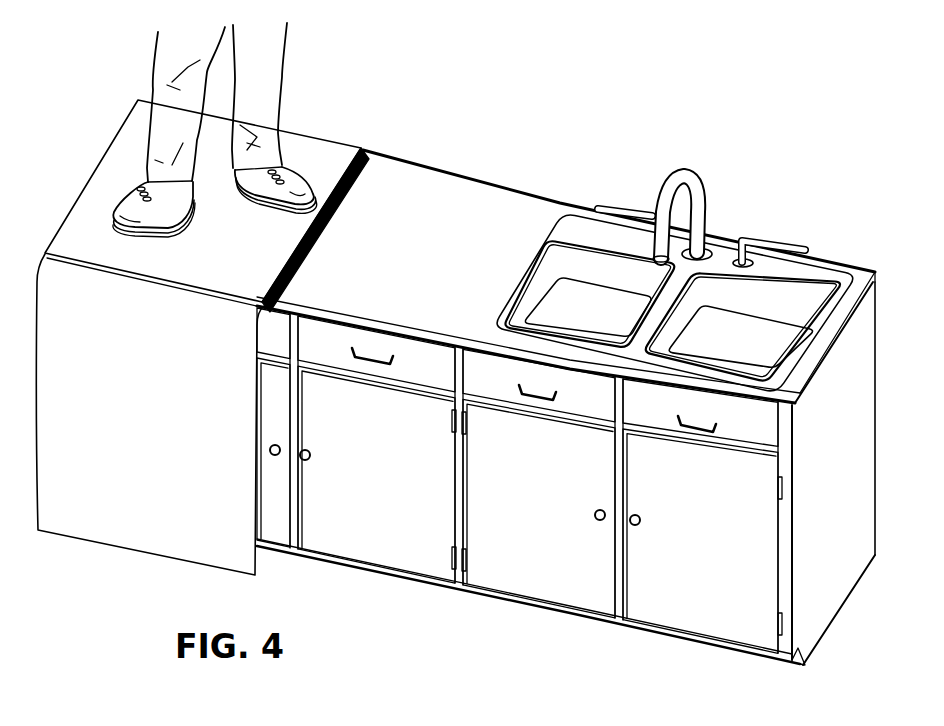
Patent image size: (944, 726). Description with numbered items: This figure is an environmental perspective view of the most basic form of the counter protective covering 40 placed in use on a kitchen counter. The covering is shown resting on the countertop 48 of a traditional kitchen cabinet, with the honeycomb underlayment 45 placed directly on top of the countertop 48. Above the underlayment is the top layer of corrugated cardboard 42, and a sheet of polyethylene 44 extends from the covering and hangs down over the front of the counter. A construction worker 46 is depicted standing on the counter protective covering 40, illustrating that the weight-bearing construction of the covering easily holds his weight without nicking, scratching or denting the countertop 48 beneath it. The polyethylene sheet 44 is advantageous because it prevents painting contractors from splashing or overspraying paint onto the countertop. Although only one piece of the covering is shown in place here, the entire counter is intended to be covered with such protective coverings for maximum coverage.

The counter protective covering 40 is at (392, 127).
The top layer of corrugated cardboard 42 is at (305, 152).
The sheet of polyethylene 44 is at (168, 401).
The honeycomb underlayment 45 is at (345, 191).
The construction worker 46 is at (160, 127).
The countertop 48 is at (452, 272).